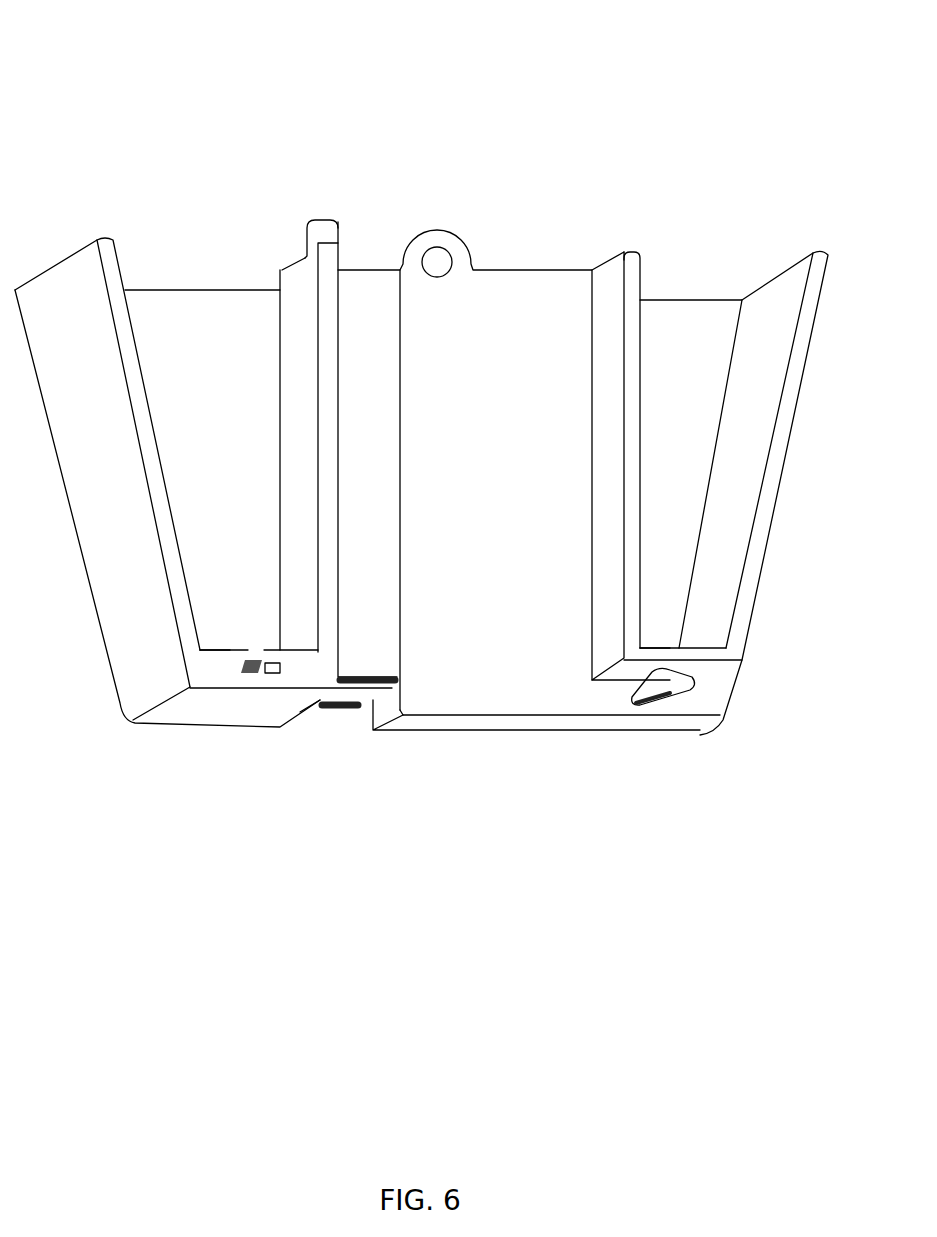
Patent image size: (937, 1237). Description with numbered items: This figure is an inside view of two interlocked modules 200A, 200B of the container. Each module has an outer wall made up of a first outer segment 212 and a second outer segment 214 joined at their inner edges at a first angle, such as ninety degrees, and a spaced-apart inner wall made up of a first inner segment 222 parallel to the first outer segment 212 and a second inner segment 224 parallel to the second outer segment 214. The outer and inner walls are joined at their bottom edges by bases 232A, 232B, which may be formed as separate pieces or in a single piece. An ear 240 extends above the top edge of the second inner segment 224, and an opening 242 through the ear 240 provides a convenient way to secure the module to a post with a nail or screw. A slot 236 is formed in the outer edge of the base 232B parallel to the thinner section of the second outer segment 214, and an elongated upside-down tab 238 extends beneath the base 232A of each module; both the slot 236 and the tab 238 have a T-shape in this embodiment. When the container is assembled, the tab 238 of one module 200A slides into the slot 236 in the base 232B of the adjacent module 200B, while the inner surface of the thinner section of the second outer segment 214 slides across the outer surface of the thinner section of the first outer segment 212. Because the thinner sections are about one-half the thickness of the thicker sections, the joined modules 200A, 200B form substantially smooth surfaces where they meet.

The module 200A is at (116, 140).
The module 200B is at (653, 106).
The first outer segment 212 is at (258, 479).
The second outer segment 214 is at (770, 307).
The first inner segment 222 is at (367, 287).
The second inner segment 224 is at (293, 290).
The base 232A is at (655, 650).
The base 232B is at (220, 650).
The slot 236 is at (263, 657).
The tab 238 is at (671, 693).
The ear 240 is at (323, 217).
The opening 242 is at (434, 238).